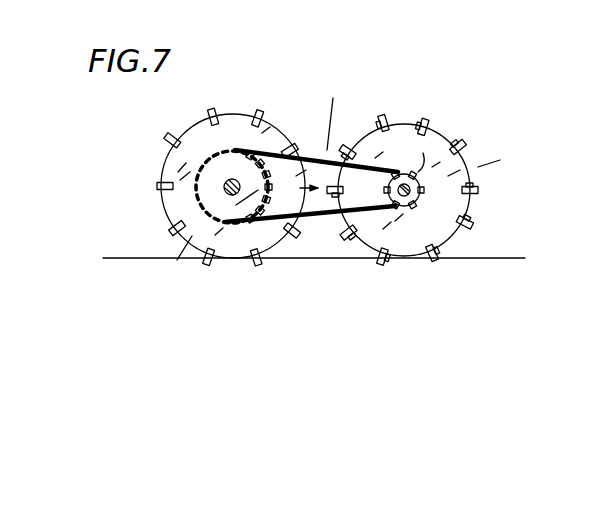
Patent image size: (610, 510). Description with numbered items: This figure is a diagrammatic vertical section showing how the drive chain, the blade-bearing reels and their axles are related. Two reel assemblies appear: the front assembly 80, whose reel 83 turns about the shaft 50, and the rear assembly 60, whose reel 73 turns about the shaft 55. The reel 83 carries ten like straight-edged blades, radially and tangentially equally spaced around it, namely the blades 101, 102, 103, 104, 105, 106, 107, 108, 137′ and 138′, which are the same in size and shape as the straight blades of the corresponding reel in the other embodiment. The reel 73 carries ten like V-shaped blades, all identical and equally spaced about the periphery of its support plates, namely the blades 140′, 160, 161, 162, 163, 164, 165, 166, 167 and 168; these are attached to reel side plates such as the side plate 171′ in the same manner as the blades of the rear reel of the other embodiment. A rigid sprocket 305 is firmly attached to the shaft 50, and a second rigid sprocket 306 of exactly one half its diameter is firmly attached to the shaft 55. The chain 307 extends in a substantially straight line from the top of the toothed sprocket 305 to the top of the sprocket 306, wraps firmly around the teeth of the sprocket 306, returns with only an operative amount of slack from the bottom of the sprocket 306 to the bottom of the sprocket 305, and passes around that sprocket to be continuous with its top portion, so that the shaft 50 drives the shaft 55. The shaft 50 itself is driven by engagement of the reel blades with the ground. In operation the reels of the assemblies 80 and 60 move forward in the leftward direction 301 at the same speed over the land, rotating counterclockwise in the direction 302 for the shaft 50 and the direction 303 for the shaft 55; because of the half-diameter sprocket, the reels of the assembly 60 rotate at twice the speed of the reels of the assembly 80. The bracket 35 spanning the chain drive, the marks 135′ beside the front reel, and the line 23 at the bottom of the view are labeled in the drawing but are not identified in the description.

The chain 35 is at (420, 70).
The reel assembly 80 is at (240, 116).
The reel assembly 60 is at (386, 118).
The shaft 50 is at (240, 181).
The shaft 55 is at (411, 196).
The counterclockwise direction of rotation 302 is at (163, 93).
The counterclockwise direction of rotation 303 is at (470, 89).
The leftward direction of travel 301 is at (360, 316).
The chain 307 is at (338, 116).
The sprocket 306 is at (408, 158).
The sprocket 305 is at (249, 163).
The straight-edged blade 108 is at (295, 190).
The straight-edged blade 101 is at (263, 113).
The straight-edged blade 102 is at (168, 142).
The straight-edged blade 103 is at (159, 188).
The straight-edged blade 104 is at (172, 228).
The straight-edged blade 105 is at (209, 262).
The straight-edged blade 106 is at (257, 263).
The straight-edged blade 107 is at (295, 234).
The straight-edged blade 137′ is at (212, 110).
The straight-edged blade 138′ is at (291, 143).
The tool holder 135′ is at (165, 172).
The V-shaped blade 140′ is at (479, 187).
The reel side plate 171′ is at (507, 160).
The V-shaped blade 160 is at (465, 150).
The V-shaped blade 161 is at (432, 127).
The V-shaped blade 162 is at (394, 122).
The V-shaped blade 163 is at (350, 145).
The V-shaped blade 164 is at (346, 188).
The V-shaped blade 165 is at (352, 236).
The V-shaped blade 166 is at (389, 260).
The V-shaped blade 167 is at (436, 258).
The V-shaped blade 168 is at (469, 221).
The reel 83 is at (107, 127).
The reel 73 is at (540, 98).
The base 23 is at (150, 258).